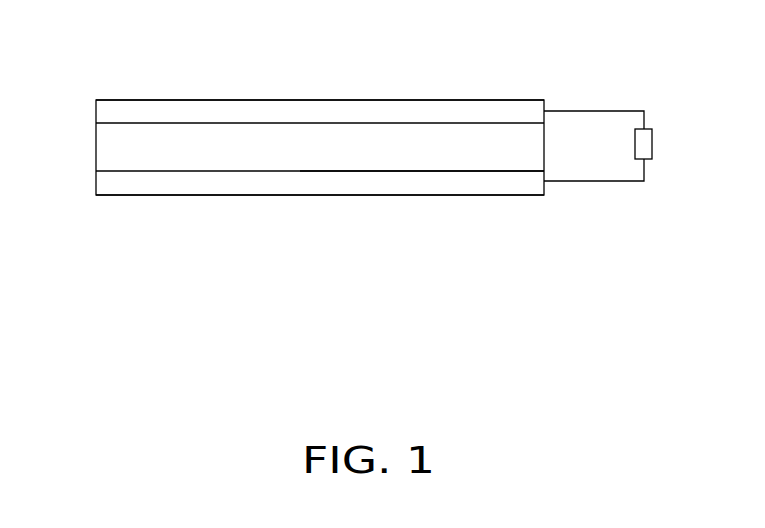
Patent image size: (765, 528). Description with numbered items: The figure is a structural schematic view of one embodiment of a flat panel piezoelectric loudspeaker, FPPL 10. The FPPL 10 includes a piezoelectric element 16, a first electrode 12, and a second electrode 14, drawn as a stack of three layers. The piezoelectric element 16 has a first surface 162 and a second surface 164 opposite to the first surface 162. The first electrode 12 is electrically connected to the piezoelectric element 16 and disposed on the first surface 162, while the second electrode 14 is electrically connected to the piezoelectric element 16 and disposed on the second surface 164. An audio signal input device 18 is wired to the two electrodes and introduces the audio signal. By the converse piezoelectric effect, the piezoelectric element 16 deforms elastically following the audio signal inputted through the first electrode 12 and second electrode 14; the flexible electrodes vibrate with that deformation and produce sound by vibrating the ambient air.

The FPPL 10 is at (40, 98).
The first electrode 12 is at (101, 113).
The second electrode 14 is at (101, 191).
The piezoelectric element 16 is at (101, 151).
The first surface 162 is at (214, 123).
The second surface 164 is at (302, 172).
The audio signal input device 18 is at (652, 147).